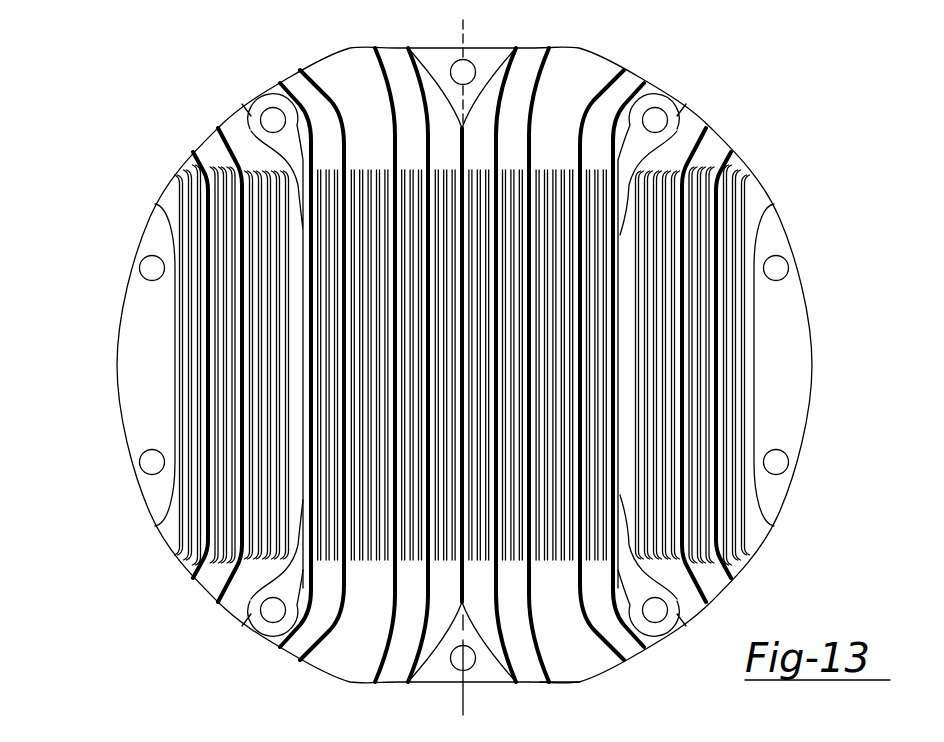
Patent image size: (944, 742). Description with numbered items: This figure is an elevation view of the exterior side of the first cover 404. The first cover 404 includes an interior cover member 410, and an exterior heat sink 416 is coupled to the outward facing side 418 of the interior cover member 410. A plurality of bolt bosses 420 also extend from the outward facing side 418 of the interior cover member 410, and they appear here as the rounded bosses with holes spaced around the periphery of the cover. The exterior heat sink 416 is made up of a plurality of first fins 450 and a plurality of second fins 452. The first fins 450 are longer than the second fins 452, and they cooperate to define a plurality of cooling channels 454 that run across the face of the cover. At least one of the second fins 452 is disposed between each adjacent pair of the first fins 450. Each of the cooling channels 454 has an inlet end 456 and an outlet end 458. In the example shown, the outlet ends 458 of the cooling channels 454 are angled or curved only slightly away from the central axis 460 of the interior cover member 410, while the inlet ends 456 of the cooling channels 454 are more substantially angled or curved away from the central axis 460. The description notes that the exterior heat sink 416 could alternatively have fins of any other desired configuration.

The first cover 404 is at (97, 390).
The interior cover member 410 is at (722, 152).
The exterior heat sink 416 is at (250, 492).
The outward facing side 418 is at (692, 124).
The bolt bosses 420 is at (256, 121).
The first fins 450 is at (566, 681).
The second fins 452 is at (727, 556).
The cooling channels 454 is at (352, 642).
The inlet end 456 is at (588, 76).
The outlet end 458 is at (308, 640).
The central axis 460 is at (466, 32).